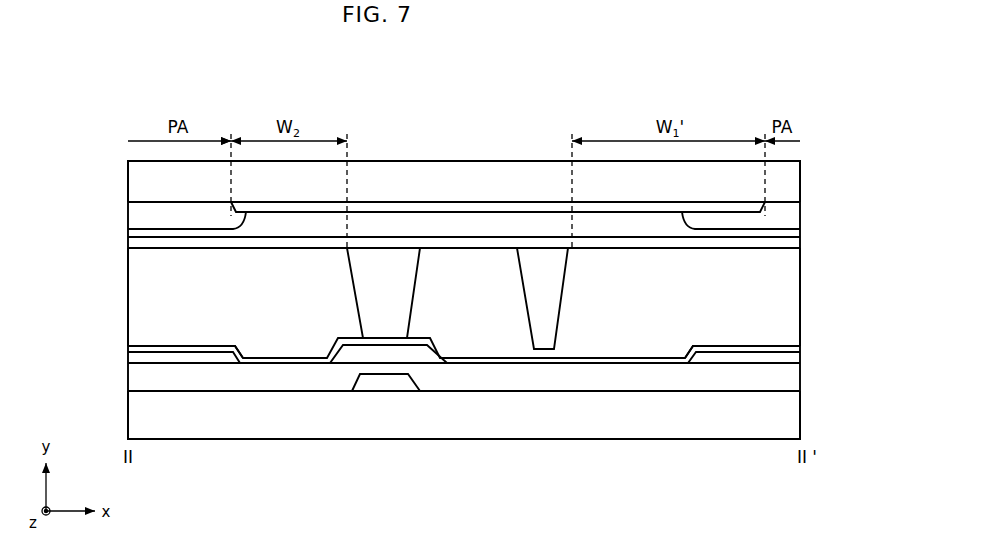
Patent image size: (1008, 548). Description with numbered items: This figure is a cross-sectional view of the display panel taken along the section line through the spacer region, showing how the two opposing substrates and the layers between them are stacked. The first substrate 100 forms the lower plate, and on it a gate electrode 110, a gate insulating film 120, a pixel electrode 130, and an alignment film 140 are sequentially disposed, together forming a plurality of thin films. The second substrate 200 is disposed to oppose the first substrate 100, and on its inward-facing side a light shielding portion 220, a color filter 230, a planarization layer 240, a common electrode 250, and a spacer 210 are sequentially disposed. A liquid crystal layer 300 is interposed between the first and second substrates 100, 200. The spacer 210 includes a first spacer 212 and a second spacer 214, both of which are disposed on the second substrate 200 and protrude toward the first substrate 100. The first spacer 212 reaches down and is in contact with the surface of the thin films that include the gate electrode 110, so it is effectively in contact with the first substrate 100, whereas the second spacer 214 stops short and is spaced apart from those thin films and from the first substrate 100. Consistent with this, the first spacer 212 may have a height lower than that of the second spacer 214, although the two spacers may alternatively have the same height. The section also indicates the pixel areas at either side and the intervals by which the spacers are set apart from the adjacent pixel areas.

The first substrate 100 is at (783, 413).
The gate electrode 110 is at (382, 383).
The gate insulating film 120 is at (566, 378).
The pixel electrode 130 is at (182, 358).
The alignment film 140 is at (283, 362).
The second substrate 200 is at (783, 181).
The spacer 210 is at (457, 202).
The first spacer 212 is at (385, 273).
The second spacer 214 is at (542, 224).
The light shielding portion 220 is at (436, 208).
The color filter 230 is at (146, 216).
The planarization layer 240 is at (493, 227).
The common electrode 250 is at (783, 243).
The liquid crystal layer 300 is at (783, 297).